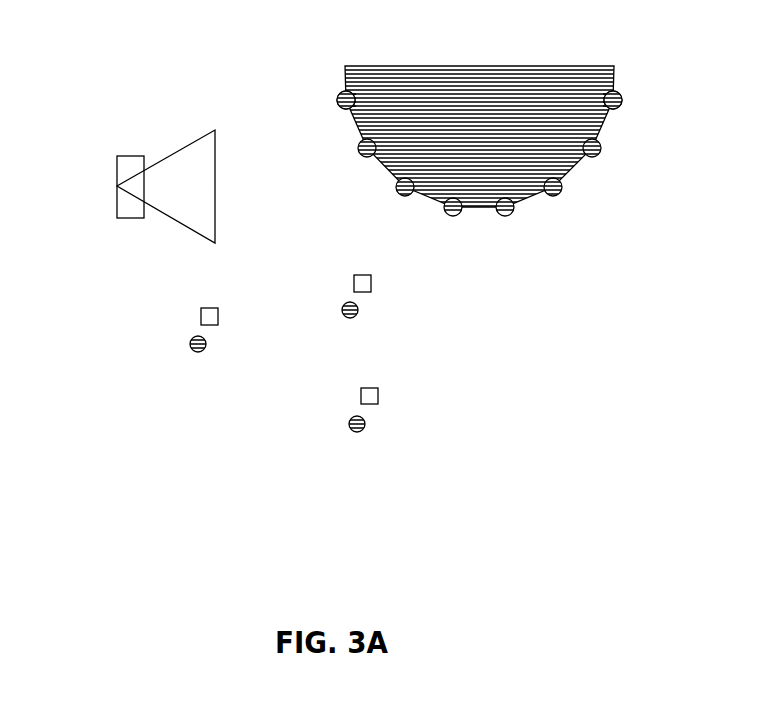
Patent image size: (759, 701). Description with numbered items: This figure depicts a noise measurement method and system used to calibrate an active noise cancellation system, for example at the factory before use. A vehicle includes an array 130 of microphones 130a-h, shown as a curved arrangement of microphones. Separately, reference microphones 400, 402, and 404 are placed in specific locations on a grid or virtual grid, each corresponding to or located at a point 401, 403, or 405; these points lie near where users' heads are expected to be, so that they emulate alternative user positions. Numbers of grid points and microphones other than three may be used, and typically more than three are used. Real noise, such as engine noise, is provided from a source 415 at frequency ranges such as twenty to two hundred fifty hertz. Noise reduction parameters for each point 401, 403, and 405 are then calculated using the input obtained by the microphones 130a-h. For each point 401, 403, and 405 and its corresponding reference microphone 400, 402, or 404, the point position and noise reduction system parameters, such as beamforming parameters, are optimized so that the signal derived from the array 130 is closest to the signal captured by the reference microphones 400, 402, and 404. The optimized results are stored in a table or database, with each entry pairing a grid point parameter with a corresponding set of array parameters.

The source 415 is at (170, 148).
The array 130 is at (505, 150).
The microphones 130a-h is at (618, 134).
The reference microphone 400 is at (201, 316).
The point 401 is at (197, 352).
The reference microphone 402 is at (354, 282).
The point 403 is at (347, 319).
The reference microphone 404 is at (378, 397).
The point 405 is at (355, 434).